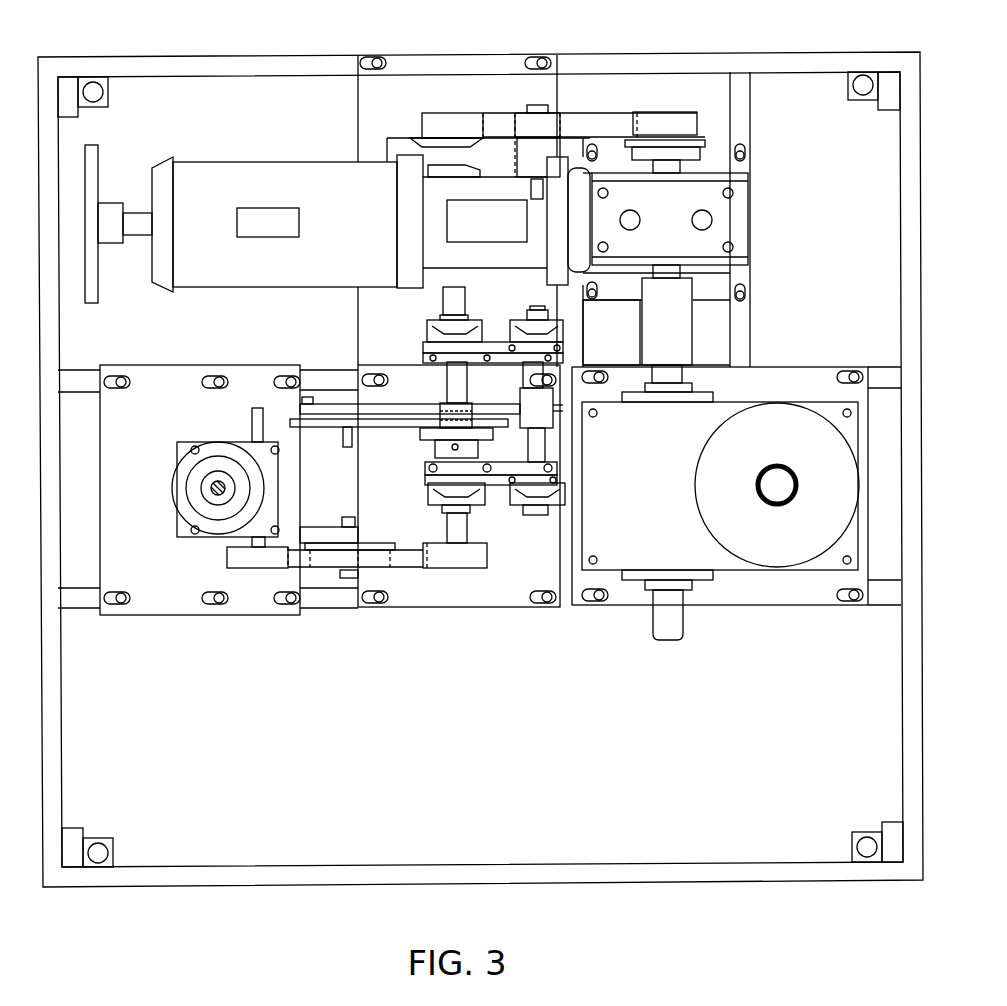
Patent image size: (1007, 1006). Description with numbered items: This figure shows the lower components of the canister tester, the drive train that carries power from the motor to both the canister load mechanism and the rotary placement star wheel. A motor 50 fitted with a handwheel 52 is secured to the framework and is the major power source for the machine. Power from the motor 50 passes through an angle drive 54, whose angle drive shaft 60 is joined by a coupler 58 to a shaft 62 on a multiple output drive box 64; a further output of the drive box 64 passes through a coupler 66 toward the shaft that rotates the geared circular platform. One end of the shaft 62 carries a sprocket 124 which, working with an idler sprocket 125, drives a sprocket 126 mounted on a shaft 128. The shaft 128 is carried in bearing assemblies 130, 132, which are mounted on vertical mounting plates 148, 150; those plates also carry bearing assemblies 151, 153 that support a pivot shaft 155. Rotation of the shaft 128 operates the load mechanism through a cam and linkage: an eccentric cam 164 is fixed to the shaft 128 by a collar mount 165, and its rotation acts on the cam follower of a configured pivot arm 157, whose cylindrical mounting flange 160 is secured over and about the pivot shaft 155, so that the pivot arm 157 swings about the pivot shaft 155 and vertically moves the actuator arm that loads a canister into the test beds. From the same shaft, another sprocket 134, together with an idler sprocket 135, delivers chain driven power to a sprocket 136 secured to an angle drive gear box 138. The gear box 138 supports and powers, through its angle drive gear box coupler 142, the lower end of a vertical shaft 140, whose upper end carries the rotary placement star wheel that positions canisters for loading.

The motor 50 is at (371, 212).
The handwheel 52 is at (118, 219).
The angle drive 54 is at (670, 219).
The coupler 58 is at (667, 321).
The angle drive shaft 60 is at (722, 296).
The shaft 62 is at (696, 616).
The multiple output drive box 64 is at (720, 477).
The coupler 66 is at (798, 495).
The sprocket 124 is at (670, 129).
The idler sprocket 125 is at (578, 119).
The sprocket 126 is at (455, 111).
The shaft 128 is at (423, 302).
The bearing assembly 130 is at (423, 330).
The bearing assembly 132 is at (426, 495).
The sprocket 134 is at (477, 575).
The idler sprocket 135 is at (361, 547).
The sprocket 136 is at (230, 588).
The angle drive gear box 138 is at (201, 476).
The vertical shaft 140 is at (169, 466).
The angle drive gear box coupler 142 is at (174, 495).
The vertical mounting plate 148 is at (423, 344).
The vertical mounting plate 150 is at (463, 466).
The bearing assembly 151 is at (517, 313).
The bearing assembly 153 is at (575, 499).
The pivot shaft 155 is at (588, 451).
The configured pivot arm 157 is at (410, 398).
The cylindrical mounting flange 160 is at (517, 395).
The eccentric cam 164 is at (399, 448).
The collar mount 165 is at (471, 410).